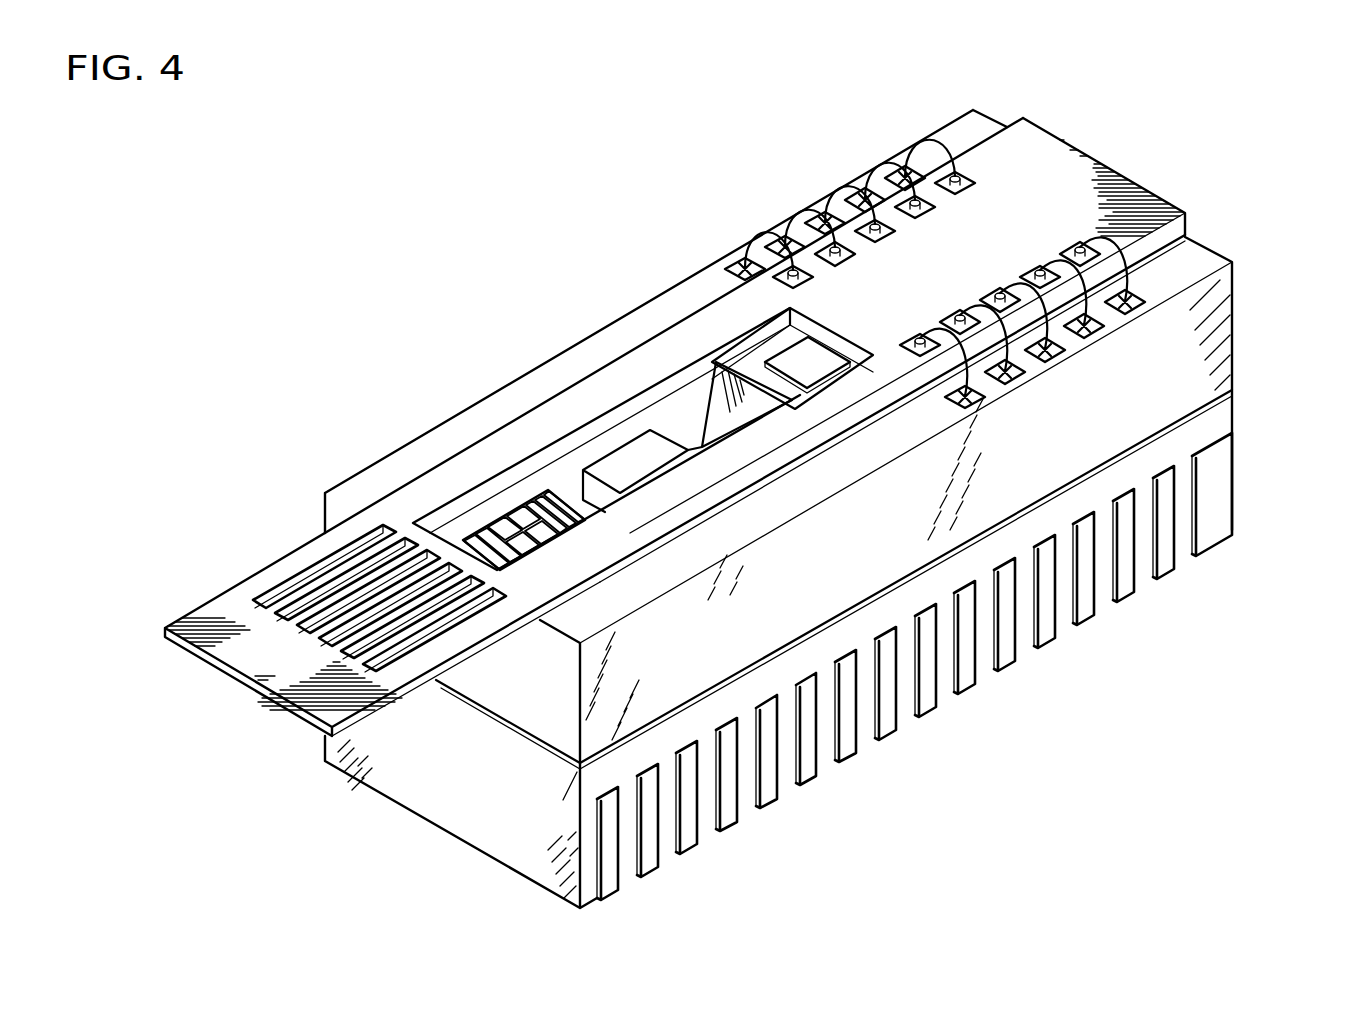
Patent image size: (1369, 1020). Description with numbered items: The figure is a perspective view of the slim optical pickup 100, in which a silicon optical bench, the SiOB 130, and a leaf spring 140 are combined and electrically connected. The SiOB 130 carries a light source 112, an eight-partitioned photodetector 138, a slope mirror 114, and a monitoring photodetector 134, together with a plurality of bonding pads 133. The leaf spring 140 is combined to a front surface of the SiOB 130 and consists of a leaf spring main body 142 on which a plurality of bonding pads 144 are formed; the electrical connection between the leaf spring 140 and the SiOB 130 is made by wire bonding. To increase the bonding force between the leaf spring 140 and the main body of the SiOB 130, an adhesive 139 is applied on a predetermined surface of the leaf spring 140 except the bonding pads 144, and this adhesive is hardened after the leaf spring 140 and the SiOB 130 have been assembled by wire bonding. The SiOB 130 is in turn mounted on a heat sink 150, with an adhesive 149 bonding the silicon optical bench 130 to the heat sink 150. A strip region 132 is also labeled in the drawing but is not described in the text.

The slim optical pickup 100 is at (413, 177).
The light source 112 is at (632, 460).
The slope mirror 114 is at (708, 370).
The SiOB 130 is at (1244, 300).
The wiring pattern 132 is at (958, 130).
The bonding pads 133 is at (1130, 300).
The monitoring photodetector 134 is at (793, 350).
The eight-partitioned photodetector 138 is at (503, 508).
The adhesive 139 is at (575, 598).
The leaf spring 140 is at (294, 530).
The leaf spring main body 142 is at (1008, 165).
The bonding pads 144 is at (1080, 247).
The adhesive 149 is at (880, 596).
The heat sink 150 is at (1197, 425).